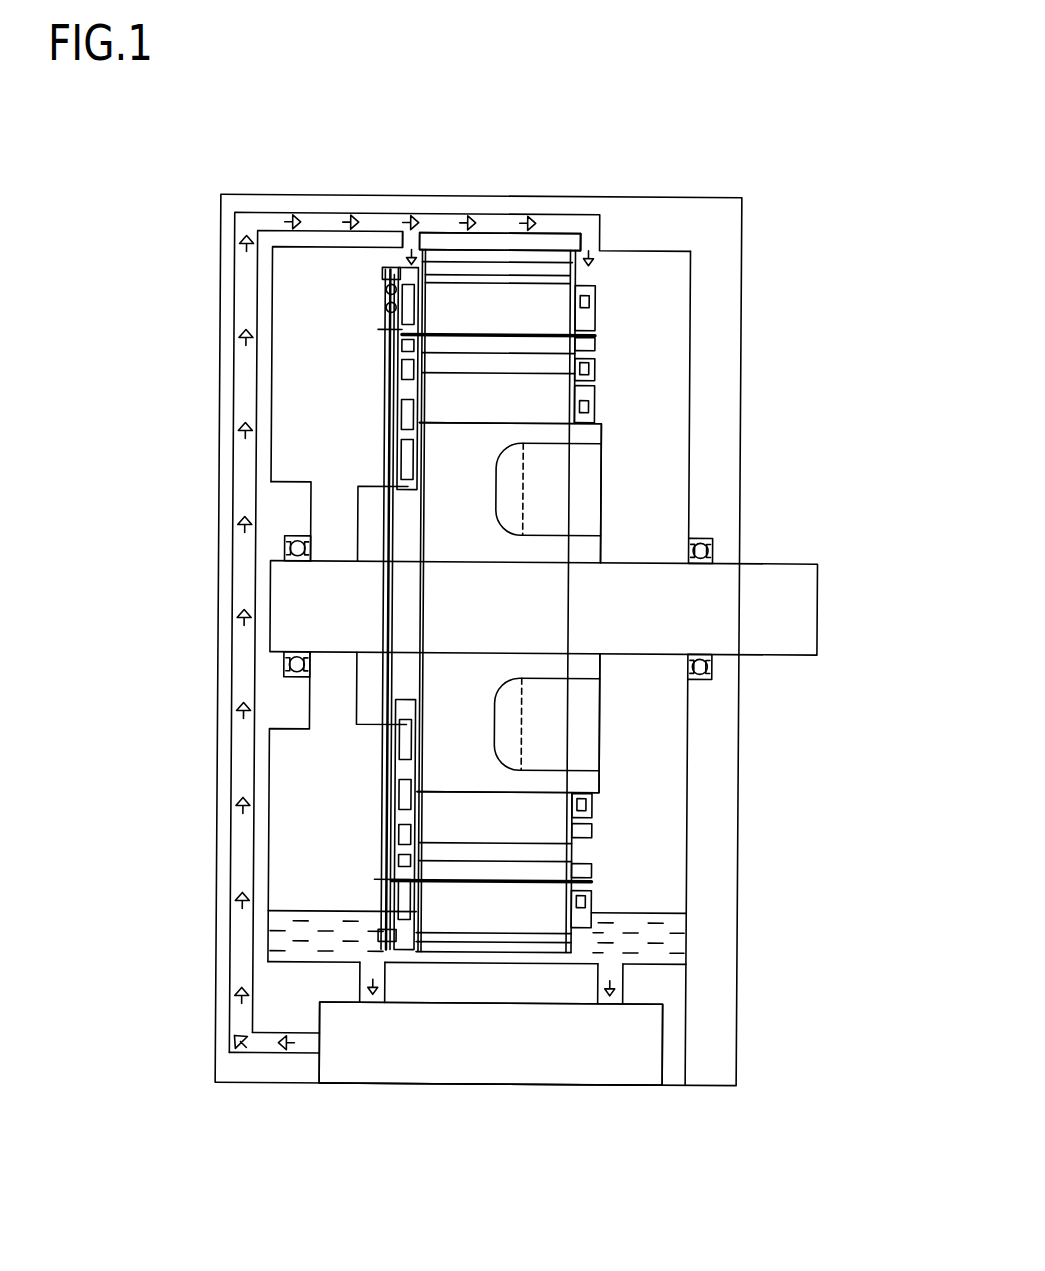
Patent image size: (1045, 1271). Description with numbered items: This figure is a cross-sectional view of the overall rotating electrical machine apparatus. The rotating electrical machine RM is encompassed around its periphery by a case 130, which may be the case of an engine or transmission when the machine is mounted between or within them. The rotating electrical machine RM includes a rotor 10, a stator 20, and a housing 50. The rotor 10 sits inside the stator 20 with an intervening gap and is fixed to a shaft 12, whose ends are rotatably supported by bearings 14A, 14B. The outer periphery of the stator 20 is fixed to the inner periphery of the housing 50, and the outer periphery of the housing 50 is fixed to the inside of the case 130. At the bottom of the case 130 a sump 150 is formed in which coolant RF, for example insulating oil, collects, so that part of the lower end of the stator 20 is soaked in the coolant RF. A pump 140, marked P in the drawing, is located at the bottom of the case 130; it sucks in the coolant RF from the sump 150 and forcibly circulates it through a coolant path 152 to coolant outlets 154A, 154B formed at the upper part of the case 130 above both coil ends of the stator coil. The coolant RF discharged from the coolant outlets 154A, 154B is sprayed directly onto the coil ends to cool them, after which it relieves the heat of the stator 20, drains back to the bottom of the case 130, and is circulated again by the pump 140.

The rotor 10 is at (532, 426).
The shaft 12 is at (792, 616).
The bearing 14A is at (285, 680).
The bearing 14B is at (705, 679).
The stator 20 is at (519, 298).
The housing 50 is at (493, 239).
The case 130 is at (705, 766).
The pump 140 is at (640, 1044).
The sump 150 is at (633, 963).
The coolant path 152 is at (240, 772).
The coolant outlet 154A is at (410, 232).
The coolant outlet 154B is at (581, 232).
The coolant RF is at (665, 928).
The rotating electrical machine RM is at (364, 349).
The pump P is at (491, 1043).